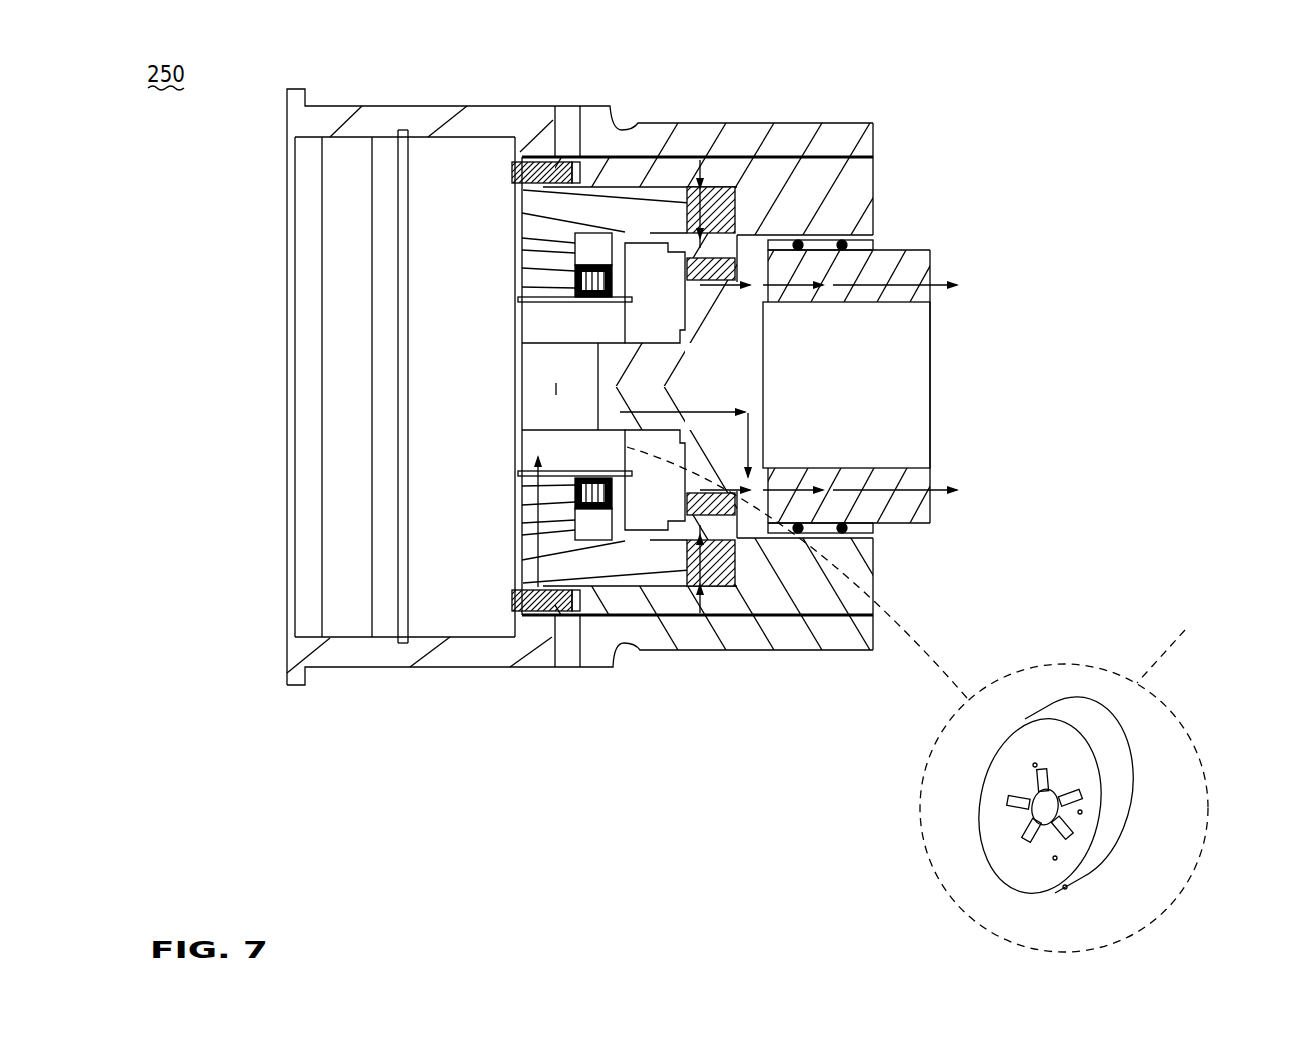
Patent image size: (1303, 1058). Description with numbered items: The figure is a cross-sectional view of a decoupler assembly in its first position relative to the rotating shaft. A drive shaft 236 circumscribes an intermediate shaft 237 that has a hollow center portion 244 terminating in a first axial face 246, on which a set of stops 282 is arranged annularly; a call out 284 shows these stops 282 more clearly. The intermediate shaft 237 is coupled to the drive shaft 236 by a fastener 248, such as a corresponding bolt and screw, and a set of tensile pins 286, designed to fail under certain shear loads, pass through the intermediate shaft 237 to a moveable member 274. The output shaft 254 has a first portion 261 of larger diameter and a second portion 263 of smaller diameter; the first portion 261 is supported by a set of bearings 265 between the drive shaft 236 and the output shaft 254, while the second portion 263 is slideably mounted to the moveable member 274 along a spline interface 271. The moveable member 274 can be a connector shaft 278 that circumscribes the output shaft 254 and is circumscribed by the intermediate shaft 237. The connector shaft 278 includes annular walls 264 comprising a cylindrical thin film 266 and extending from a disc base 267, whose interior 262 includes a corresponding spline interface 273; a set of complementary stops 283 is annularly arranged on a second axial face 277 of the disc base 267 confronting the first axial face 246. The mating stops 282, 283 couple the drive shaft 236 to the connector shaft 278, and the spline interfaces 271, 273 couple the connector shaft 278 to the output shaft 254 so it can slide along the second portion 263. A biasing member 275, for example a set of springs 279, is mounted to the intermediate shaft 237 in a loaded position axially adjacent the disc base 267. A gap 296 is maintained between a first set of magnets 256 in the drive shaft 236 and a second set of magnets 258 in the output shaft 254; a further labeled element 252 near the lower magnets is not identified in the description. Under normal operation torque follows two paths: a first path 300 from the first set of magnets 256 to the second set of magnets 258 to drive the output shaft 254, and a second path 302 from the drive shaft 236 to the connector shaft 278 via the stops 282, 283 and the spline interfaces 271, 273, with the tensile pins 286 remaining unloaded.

The drive shaft 236 is at (352, 96).
The set of tensile pins 286 is at (522, 297).
The fastener 248 is at (545, 168).
The set of springs 279 is at (591, 268).
The disc base 267 is at (627, 255).
The intermediate shaft 237 is at (623, 205).
The annular walls 264 is at (676, 245).
The spline interface 271 is at (670, 187).
The first path 300 is at (702, 160).
The first set of magnets 256 is at (745, 185).
The gap 296 is at (702, 257).
The second set of magnets 258 is at (715, 253).
The set of bearings 265 is at (808, 252).
The output shaft 254 is at (880, 280).
The corresponding spline interface 273 is at (745, 412).
The first axial face 246 is at (530, 328).
The hollow center portion 244 is at (556, 389).
The second portion 263 is at (658, 393).
The complementary stops 283 is at (603, 457).
The biasing member 275 is at (538, 505).
The second path 302 is at (538, 543).
The moveable member 274 is at (637, 548).
The connector shaft 278 is at (637, 548).
The valve seat 252 is at (670, 590).
The cylindrical thin film 266 is at (688, 548).
The first portion 261 is at (860, 553).
The interior 262 is at (1047, 800).
The call out 284 is at (922, 699).
The set of stops 282 is at (1063, 802).
The second axial face 277 is at (1063, 833).